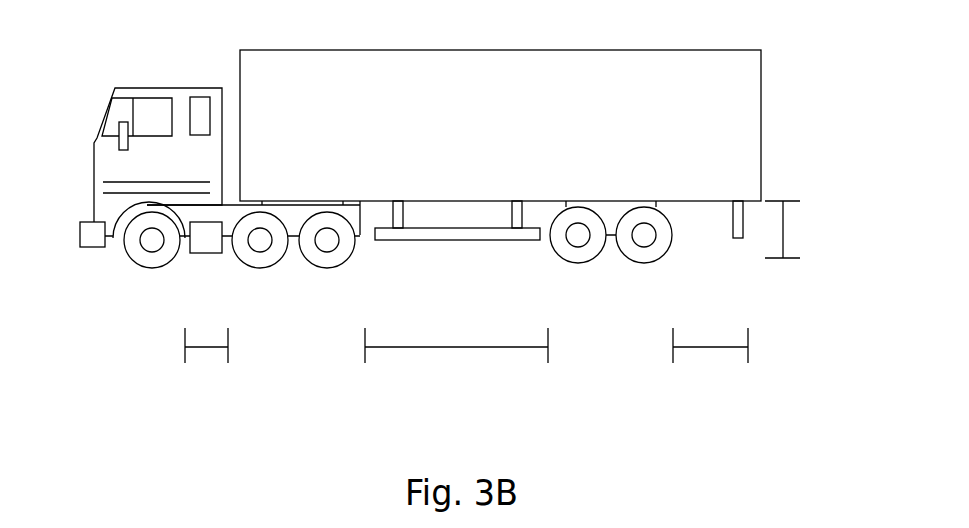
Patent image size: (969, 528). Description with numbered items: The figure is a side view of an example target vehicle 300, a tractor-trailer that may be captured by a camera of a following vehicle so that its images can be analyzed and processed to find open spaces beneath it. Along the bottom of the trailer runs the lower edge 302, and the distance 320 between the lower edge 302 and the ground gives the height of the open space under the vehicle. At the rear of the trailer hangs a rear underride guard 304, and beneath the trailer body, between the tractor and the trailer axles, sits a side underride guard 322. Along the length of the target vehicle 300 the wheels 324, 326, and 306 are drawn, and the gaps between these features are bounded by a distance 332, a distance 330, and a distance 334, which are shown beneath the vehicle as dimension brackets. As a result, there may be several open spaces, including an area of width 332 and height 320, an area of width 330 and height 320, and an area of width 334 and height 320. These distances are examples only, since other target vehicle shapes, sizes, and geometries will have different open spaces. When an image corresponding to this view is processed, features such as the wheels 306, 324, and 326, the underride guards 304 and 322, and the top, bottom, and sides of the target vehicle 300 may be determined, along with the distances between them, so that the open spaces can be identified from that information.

The target vehicle 300 is at (177, 31).
The lower edge 302 is at (761, 201).
The rear underride guard 304 is at (740, 213).
The wheels 306 is at (657, 253).
The distance between the lower edge and the ground 320 is at (783, 229).
The side underride guard 322 is at (410, 234).
The wheels 324 is at (338, 255).
The wheels 326 is at (577, 253).
The distance 330 is at (458, 347).
The distance 332 is at (207, 347).
The distance 334 is at (712, 347).